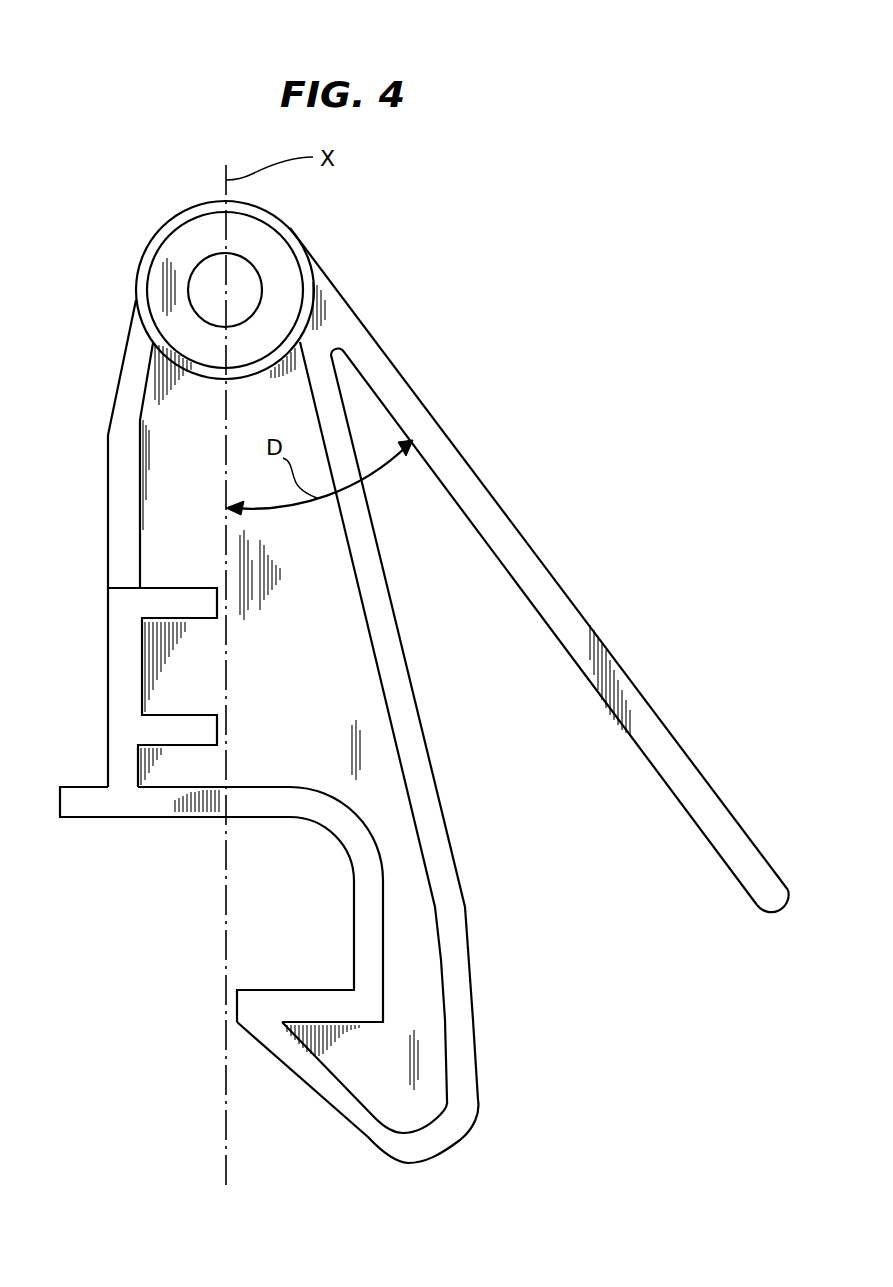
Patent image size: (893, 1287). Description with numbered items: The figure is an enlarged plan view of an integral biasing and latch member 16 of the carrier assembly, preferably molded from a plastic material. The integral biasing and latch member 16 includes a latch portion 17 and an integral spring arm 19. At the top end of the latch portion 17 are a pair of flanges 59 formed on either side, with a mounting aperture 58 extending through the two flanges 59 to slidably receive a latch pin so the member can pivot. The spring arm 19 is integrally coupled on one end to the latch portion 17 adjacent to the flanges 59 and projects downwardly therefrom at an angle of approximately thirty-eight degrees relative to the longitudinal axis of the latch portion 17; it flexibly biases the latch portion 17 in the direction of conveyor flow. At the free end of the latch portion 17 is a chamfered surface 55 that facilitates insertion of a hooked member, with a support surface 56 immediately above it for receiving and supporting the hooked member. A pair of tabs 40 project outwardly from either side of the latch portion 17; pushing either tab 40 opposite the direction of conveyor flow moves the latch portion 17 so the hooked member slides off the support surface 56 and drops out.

The integral biasing and latch member 16 is at (558, 556).
The latch portion 17 is at (108, 478).
The spring arm 19 is at (757, 905).
The tabs 40 is at (108, 650).
The chamfered surface 55 is at (280, 1064).
The support surface 56 is at (296, 990).
The mounting aperture 58 is at (198, 262).
The flanges 59 is at (157, 303).